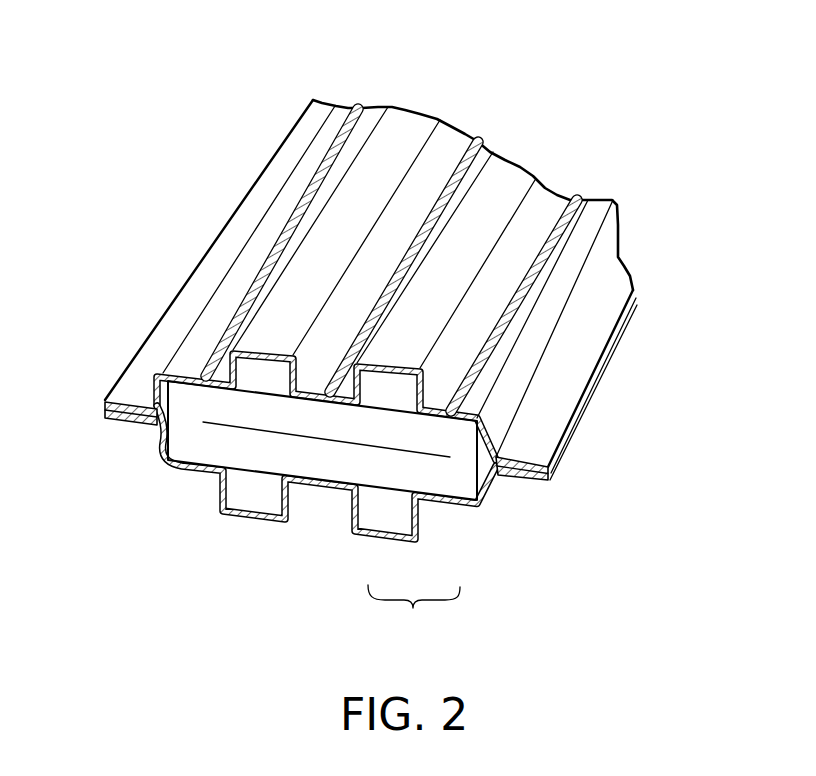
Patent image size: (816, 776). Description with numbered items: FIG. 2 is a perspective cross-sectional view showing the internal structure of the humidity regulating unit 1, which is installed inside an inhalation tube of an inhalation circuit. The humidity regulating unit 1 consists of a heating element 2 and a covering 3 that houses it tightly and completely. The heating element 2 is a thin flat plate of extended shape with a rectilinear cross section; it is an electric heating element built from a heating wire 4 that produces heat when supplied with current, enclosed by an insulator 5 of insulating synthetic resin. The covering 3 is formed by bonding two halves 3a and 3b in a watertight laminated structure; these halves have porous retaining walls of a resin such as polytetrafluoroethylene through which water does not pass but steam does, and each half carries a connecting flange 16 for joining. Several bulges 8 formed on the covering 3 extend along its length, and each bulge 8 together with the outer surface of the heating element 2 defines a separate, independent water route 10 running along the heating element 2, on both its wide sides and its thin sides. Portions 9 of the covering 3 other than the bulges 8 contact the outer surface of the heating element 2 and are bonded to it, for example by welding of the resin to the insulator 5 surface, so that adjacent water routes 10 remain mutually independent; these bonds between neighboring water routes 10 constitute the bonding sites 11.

The humidity regulating unit 1 is at (590, 152).
The heating element 2 is at (414, 612).
The covering 3 is at (137, 352).
The half of covering 3a is at (475, 512).
The half of covering 3b is at (548, 276).
The heating wire 4 is at (403, 452).
The insulator 5 is at (456, 480).
The bulges 8 is at (500, 180).
The portions of covering 9 is at (305, 187).
The water route 10 is at (385, 385).
The bonding sites 11 is at (438, 197).
The connecting flange 16 is at (600, 310).